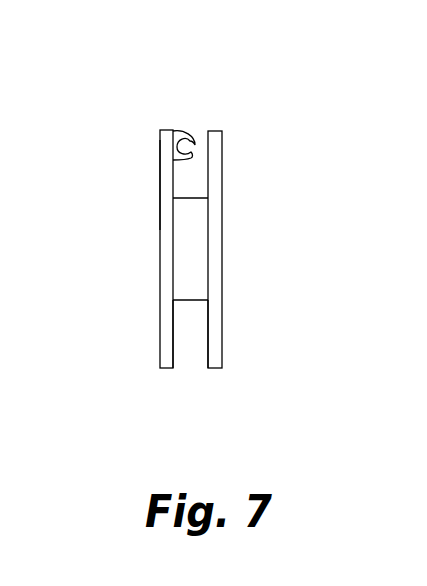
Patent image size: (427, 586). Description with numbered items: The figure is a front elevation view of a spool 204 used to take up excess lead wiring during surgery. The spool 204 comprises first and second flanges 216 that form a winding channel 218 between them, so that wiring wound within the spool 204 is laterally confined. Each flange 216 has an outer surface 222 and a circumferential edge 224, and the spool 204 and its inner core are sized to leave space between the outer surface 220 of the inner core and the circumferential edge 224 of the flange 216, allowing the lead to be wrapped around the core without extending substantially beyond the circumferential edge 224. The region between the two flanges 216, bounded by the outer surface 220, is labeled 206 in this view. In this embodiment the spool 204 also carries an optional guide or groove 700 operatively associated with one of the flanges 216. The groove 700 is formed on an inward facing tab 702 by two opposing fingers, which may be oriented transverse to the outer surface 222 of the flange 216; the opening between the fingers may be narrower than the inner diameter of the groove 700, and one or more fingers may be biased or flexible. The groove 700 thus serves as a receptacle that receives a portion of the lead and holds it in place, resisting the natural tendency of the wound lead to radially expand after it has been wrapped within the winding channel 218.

The spool 204 is at (205, 237).
The groove 700 is at (177, 256).
The inward facing tab 702 is at (178, 134).
The outer surface 222 is at (160, 180).
The circumferential edge 224 is at (222, 133).
The upper cross member 206 is at (192, 261).
The outer surface 220 is at (193, 302).
The flange 216 is at (160, 335).
The winding channel 218 is at (190, 372).